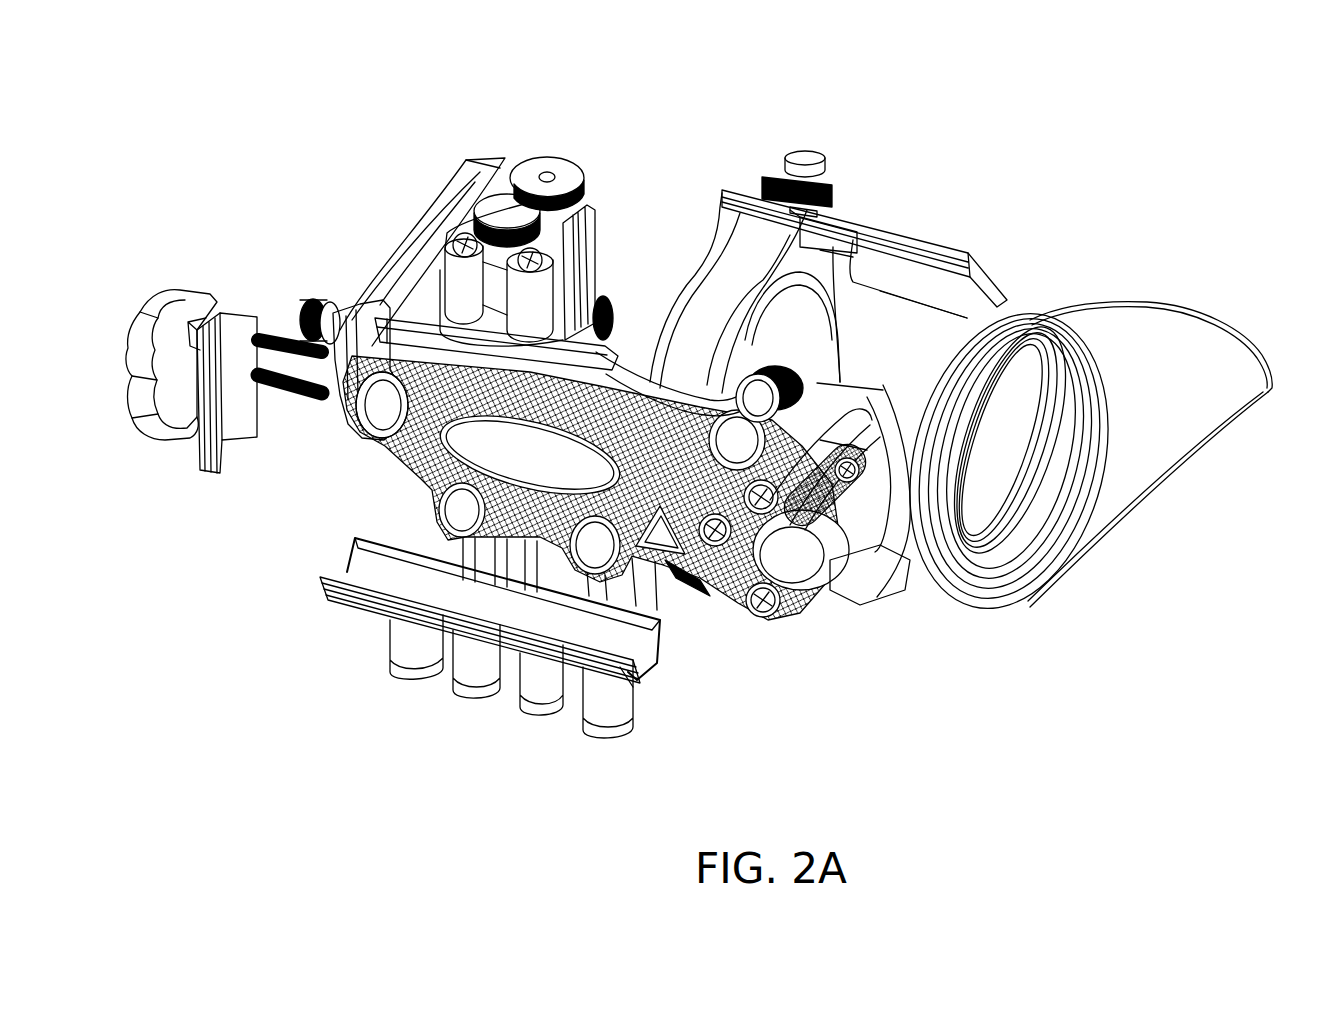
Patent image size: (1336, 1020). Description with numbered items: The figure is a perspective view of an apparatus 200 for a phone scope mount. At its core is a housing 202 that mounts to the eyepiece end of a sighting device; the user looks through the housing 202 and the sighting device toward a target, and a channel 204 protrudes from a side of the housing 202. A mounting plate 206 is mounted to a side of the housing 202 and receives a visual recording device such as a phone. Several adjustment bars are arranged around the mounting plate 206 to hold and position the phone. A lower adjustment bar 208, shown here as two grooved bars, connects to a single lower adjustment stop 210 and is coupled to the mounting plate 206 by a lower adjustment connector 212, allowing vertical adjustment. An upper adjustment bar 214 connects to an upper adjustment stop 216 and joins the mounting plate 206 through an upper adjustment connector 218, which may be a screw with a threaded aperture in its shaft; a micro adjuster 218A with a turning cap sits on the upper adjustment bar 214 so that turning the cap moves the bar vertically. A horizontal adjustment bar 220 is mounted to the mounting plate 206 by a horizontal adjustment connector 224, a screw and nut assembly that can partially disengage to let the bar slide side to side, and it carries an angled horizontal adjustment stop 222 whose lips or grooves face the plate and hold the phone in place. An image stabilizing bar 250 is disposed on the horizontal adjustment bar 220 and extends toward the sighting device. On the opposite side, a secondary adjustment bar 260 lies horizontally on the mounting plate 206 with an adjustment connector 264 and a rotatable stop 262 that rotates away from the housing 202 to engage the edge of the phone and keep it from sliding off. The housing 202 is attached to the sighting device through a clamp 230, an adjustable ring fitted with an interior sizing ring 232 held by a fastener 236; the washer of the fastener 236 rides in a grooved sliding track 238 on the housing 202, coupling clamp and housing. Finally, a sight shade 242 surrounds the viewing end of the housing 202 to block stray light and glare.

The apparatus 200 is at (316, 66).
The housing 202 is at (928, 342).
The channel 204 is at (870, 528).
The mounting plate 206 is at (214, 565).
The lower adjustment bar 208 is at (647, 590).
The lower adjustment stop 210 is at (355, 598).
The lower adjustment connector 212 is at (455, 503).
The upper adjustment bar 214 is at (590, 268).
The upper adjustment stop 216 is at (390, 302).
The upper adjustment connector 218 is at (604, 312).
The micro adjuster 218A is at (570, 177).
The horizontal adjustment bar 220 is at (283, 333).
The horizontal adjustment stop 222 is at (246, 430).
The horizontal adjustment connector 224 is at (384, 412).
The clamp 230 is at (723, 250).
The sizing ring 232 is at (786, 310).
The fastener 236 is at (828, 192).
The sliding track 238 is at (893, 233).
The sight shade 242 is at (1200, 327).
The image stabilizing bar 250 is at (410, 191).
The secondary adjustment bar 260 is at (797, 443).
The rotatable stop 262 is at (853, 440).
The adjustment connector 264 is at (797, 388).